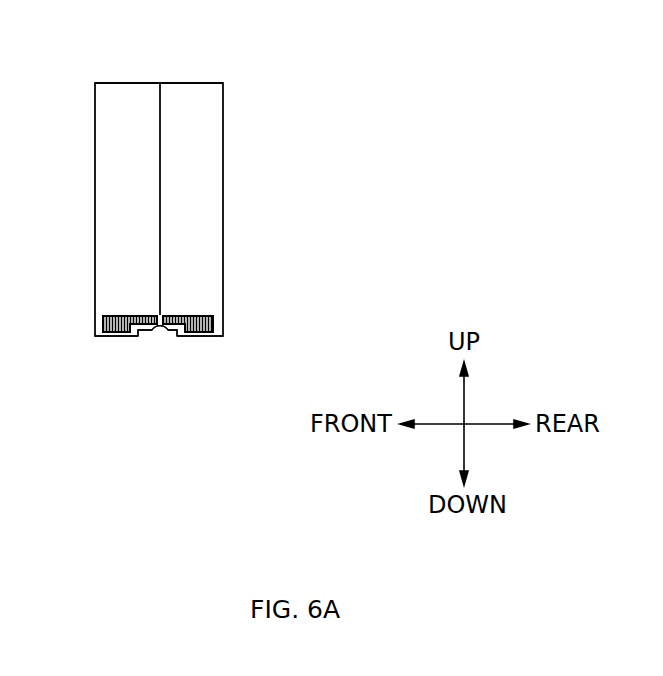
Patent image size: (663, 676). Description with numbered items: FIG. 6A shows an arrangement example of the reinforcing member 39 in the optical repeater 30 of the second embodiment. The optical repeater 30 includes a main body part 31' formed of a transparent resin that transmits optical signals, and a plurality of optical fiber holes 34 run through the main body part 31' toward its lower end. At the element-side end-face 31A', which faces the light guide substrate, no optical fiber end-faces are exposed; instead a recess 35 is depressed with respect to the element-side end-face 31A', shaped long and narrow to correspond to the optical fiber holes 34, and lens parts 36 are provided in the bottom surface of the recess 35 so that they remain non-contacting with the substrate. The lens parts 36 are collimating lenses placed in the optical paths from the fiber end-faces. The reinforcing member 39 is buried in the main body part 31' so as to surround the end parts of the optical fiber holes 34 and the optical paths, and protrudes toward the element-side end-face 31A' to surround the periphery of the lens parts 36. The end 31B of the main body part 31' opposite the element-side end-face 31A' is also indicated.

The optical repeater 30 is at (295, 100).
The second plate 31B is at (208, 83).
The main body part 31' is at (256, 209).
The optical fiber holes 34 is at (160, 183).
The reinforcing member 39 is at (200, 317).
The element-side end-face 31A' is at (97, 247).
The lens parts 36 is at (158, 337).
The recess 35 is at (168, 345).